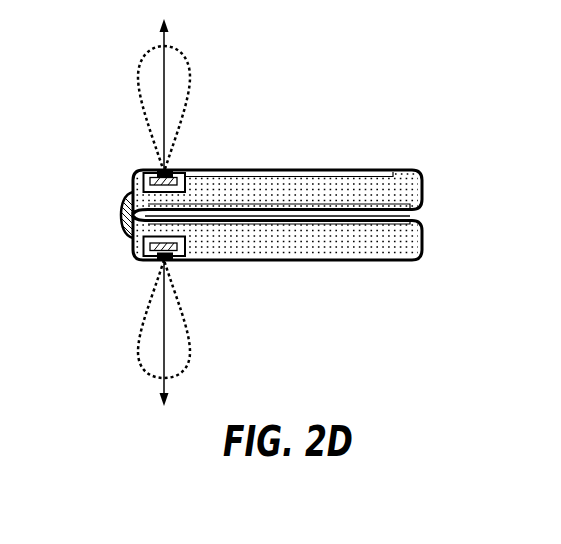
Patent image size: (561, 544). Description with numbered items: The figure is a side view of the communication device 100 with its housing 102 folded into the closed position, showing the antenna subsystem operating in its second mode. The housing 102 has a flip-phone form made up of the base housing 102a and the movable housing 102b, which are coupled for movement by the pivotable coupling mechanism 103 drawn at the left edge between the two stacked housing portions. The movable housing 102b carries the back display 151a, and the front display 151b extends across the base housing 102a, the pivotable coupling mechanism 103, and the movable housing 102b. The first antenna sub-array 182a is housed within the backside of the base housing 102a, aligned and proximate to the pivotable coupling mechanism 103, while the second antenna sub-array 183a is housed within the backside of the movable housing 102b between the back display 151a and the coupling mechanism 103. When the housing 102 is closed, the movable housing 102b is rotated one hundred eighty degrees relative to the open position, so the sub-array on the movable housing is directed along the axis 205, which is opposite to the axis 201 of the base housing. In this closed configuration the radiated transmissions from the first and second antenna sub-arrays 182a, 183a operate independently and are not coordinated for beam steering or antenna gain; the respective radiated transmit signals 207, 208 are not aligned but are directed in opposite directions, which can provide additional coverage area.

The communication device 100 is at (99, 176).
The housing 102 is at (307, 261).
The base housing 102a is at (423, 252).
The movable housing 102b is at (423, 186).
The pivotable coupling mechanism 103 is at (122, 227).
The back display 151a is at (378, 170).
The front display 151b is at (382, 223).
The first antenna sub-array 182a is at (175, 261).
The second antenna sub-array 183a is at (173, 167).
The axis 201 is at (167, 320).
The axis 205 is at (165, 63).
The radiated transmit signal 207 is at (192, 350).
The radiated transmit signal 208 is at (190, 95).